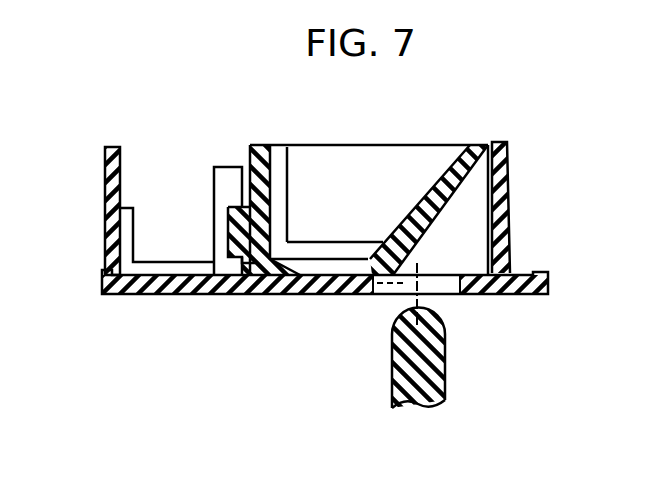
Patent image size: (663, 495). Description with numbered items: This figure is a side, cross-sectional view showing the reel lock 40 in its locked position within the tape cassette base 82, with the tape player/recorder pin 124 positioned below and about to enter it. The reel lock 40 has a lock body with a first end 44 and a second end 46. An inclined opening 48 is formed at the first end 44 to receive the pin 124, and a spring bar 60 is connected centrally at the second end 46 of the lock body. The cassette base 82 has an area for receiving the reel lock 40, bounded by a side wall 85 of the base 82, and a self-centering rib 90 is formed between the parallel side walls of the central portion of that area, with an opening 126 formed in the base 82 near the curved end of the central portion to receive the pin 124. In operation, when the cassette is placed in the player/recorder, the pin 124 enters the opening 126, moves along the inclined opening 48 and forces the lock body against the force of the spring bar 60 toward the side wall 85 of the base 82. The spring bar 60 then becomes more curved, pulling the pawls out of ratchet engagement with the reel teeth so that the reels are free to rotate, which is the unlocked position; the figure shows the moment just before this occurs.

The reel lock 40 is at (370, 154).
The first end 44 is at (478, 148).
The second end 46 is at (253, 147).
The inclined opening 48 is at (425, 230).
The spring bar 60 is at (235, 235).
The tape cassette base 82 is at (503, 263).
The side wall 85 is at (112, 198).
The self-centering rib 90 is at (165, 270).
The tape player/recorder pin 124 is at (435, 368).
The opening 126 is at (380, 292).